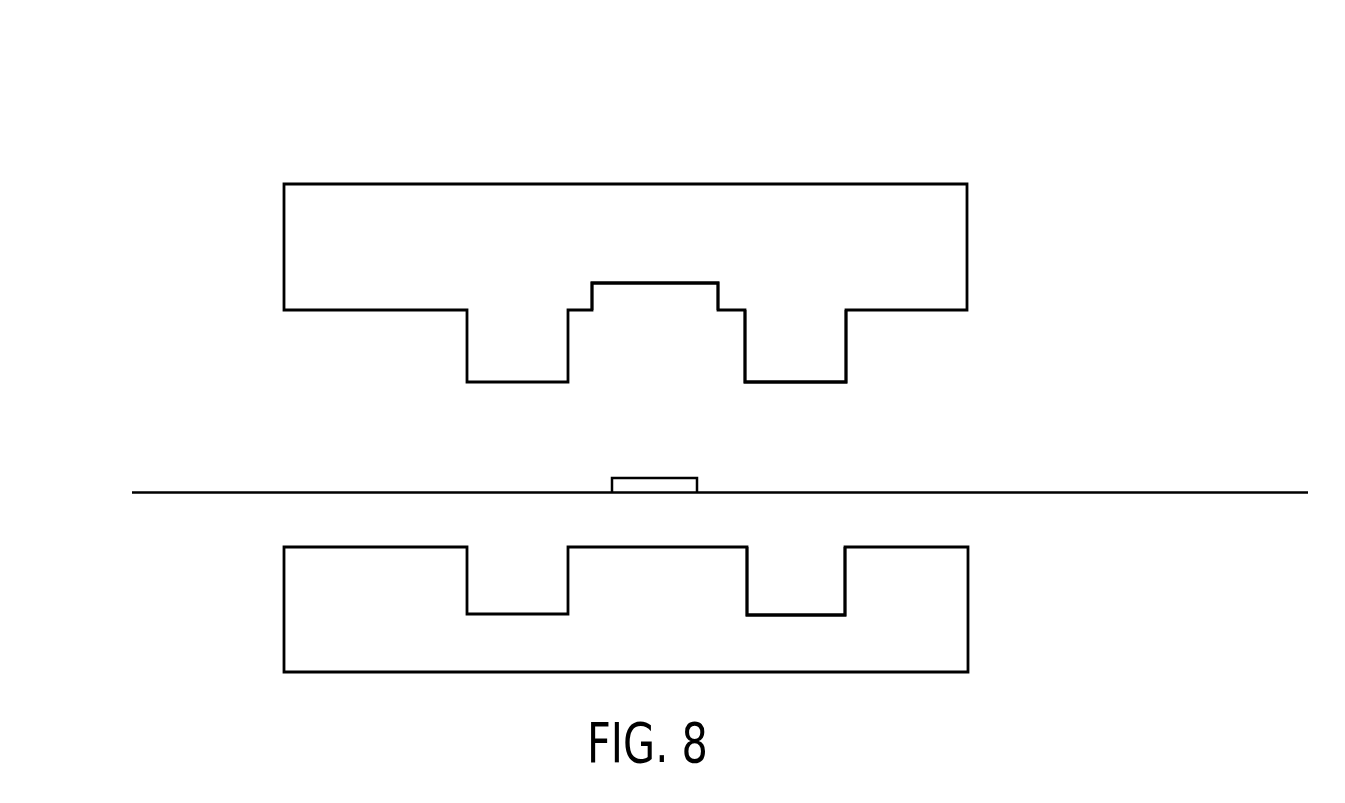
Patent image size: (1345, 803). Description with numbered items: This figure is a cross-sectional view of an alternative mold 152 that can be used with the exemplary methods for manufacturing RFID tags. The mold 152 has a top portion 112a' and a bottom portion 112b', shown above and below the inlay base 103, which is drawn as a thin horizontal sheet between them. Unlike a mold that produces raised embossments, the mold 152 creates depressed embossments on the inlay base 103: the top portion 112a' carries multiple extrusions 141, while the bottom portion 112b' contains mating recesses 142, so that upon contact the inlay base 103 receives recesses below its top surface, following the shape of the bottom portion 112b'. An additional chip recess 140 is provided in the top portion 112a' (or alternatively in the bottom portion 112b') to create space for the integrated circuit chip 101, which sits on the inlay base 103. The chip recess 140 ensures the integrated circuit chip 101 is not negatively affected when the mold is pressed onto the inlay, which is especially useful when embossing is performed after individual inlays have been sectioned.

The alternative mold 152 is at (982, 98).
The top portion 112a' is at (625, 283).
The bottom portion 112b' is at (626, 609).
The chip recess 140 is at (657, 290).
The extrusions 141 is at (828, 355).
The mating recesses 142 is at (806, 590).
The integrated circuit chip 101 is at (630, 485).
The inlay base 103 is at (1293, 488).